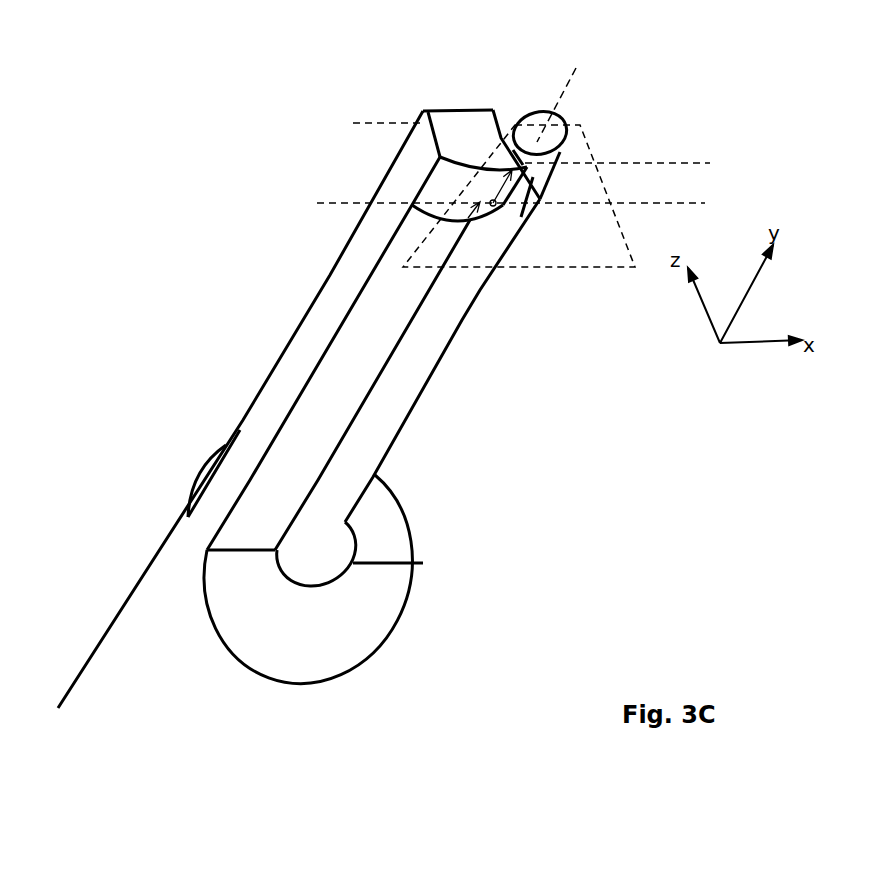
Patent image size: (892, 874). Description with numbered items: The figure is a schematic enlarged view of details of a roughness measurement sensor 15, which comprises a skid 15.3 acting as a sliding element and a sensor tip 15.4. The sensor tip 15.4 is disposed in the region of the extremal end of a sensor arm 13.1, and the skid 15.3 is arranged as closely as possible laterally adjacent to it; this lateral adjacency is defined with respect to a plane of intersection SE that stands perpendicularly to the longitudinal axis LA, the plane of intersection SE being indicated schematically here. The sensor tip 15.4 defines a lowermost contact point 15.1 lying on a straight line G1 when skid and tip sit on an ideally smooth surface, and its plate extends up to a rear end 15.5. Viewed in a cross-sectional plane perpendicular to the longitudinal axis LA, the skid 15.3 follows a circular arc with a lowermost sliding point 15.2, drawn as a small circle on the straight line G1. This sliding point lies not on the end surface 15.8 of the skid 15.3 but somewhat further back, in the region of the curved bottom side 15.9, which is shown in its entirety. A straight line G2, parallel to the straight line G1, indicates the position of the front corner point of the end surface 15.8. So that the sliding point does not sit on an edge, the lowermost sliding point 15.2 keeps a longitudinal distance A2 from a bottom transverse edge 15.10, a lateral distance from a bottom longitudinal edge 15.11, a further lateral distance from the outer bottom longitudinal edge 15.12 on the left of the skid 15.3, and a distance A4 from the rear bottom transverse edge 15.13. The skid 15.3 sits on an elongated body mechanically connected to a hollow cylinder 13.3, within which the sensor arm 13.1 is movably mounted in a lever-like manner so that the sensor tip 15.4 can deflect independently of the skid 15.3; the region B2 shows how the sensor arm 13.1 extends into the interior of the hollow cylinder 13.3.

The roughness measurement sensor 15 is at (173, 174).
The lowermost contact point 15.1 is at (549, 206).
The lowermost sliding point 15.2 is at (497, 221).
The skid 15.3 is at (416, 161).
The sensor tip 15.4 is at (535, 172).
The rear end 15.5 is at (292, 357).
The end surface/end face 15.8 is at (442, 132).
The curved bottom side 15.9 is at (440, 191).
The bottom transverse edge 15.10 is at (496, 166).
The bottom longitudinal edge 15.11 is at (504, 215).
The outer bottom longitudinal edge 15.12 is at (442, 186).
The bottom transverse edge 15.13 is at (425, 212).
The sensor arm 13.1 is at (413, 401).
The hollow cylinder 13.3 is at (394, 597).
The region B2 is at (351, 543).
The plane of intersection SE is at (356, 121).
The straight line G1 is at (495, 206).
The straight line G2 is at (635, 160).
The longitudinal axis LA is at (571, 92).
The longitudinal distance A2 is at (495, 188).
The distance A4 is at (463, 212).